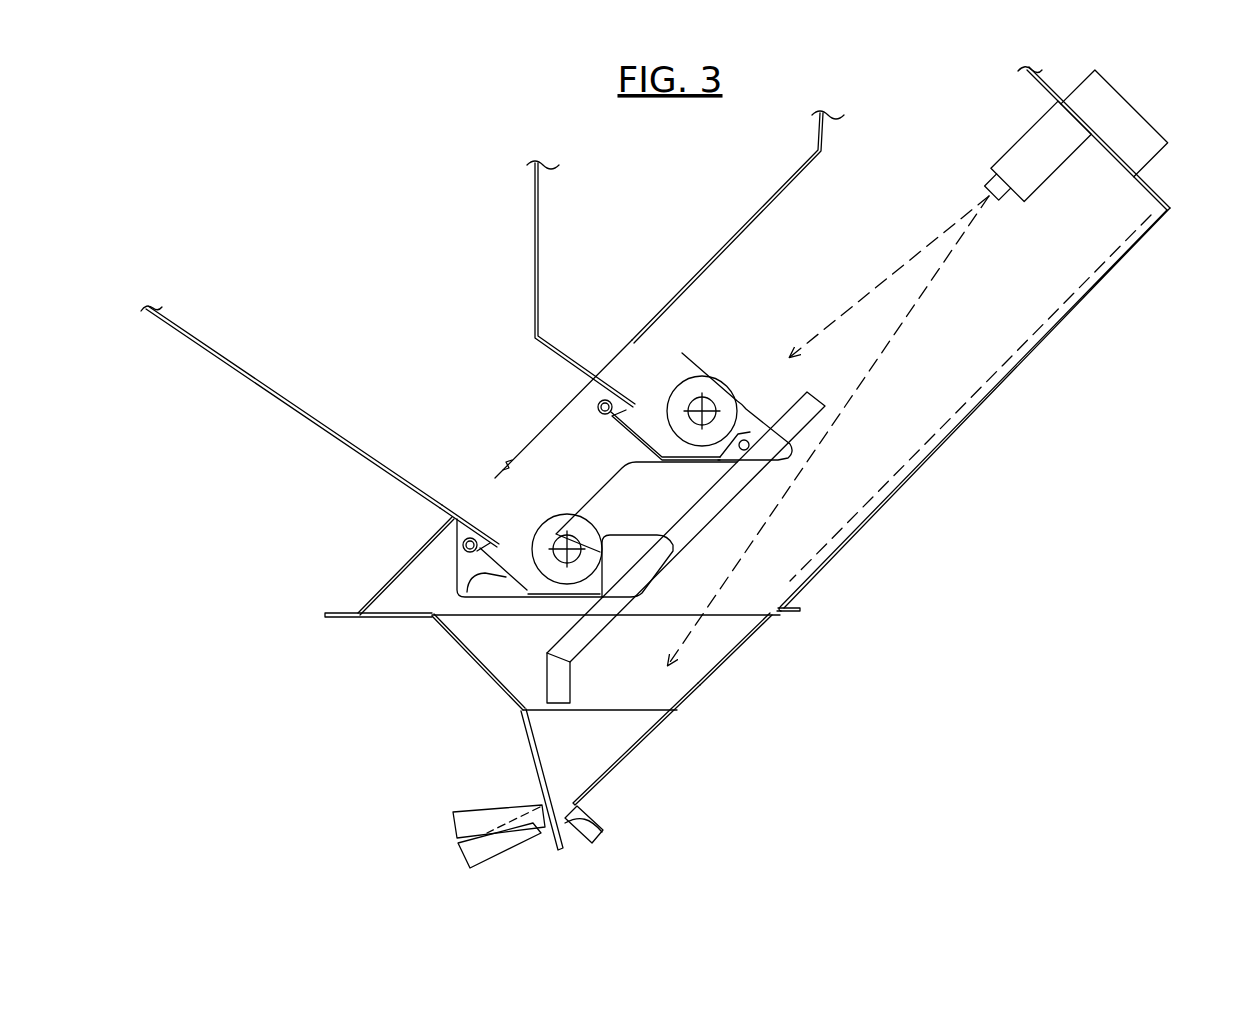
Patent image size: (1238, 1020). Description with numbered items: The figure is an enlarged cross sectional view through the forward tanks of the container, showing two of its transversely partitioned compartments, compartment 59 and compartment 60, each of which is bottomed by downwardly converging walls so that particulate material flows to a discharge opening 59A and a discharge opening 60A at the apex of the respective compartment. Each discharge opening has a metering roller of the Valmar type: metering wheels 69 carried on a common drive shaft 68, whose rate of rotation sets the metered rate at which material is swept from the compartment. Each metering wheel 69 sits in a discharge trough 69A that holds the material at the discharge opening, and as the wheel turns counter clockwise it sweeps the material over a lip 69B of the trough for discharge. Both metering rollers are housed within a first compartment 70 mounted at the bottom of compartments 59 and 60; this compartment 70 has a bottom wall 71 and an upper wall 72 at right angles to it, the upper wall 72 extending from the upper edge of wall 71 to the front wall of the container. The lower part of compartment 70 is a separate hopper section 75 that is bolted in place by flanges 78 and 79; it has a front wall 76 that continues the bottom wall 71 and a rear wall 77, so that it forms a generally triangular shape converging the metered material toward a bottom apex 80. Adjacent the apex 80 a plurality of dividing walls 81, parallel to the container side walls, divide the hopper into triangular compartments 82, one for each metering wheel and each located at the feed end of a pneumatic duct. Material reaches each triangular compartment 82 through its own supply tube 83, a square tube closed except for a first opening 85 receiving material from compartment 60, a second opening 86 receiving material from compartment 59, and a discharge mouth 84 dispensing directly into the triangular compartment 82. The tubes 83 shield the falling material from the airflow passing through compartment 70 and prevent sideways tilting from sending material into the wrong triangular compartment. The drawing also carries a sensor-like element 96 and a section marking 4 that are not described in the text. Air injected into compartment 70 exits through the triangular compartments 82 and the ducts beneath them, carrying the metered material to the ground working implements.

The compartment 59 is at (291, 407).
The discharge opening 59A is at (472, 493).
The compartment 60 is at (685, 259).
The discharge opening 60A is at (615, 353).
The common drive shaft 68 is at (706, 409).
The metering wheel 69 is at (682, 353).
The discharge trough 69A is at (472, 603).
The lip 69B is at (603, 567).
The first compartment 70 is at (873, 511).
The bottom wall 71 is at (962, 408).
The upper wall 72 is at (1060, 101).
The hopper section 75 is at (640, 433).
The front wall 76 is at (655, 738).
The rear wall 77 is at (490, 674).
The flange 78 is at (797, 614).
The flange 79 is at (355, 616).
The bottom apex 80 is at (602, 832).
The dividing wall 81 is at (645, 709).
The triangular compartment 82 is at (562, 745).
The supply tube 83 is at (697, 518).
The discharge mouth 84 is at (545, 681).
The first opening 85 is at (781, 405).
The second opening 86 is at (640, 562).
The sensor 96 is at (1037, 190).
The section line 4 is at (1167, 162).